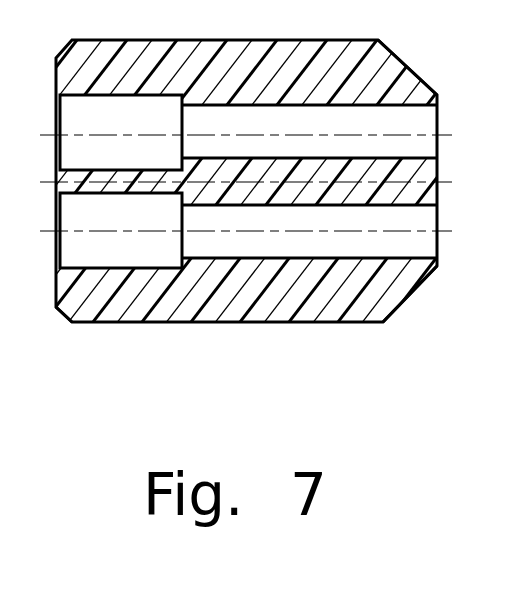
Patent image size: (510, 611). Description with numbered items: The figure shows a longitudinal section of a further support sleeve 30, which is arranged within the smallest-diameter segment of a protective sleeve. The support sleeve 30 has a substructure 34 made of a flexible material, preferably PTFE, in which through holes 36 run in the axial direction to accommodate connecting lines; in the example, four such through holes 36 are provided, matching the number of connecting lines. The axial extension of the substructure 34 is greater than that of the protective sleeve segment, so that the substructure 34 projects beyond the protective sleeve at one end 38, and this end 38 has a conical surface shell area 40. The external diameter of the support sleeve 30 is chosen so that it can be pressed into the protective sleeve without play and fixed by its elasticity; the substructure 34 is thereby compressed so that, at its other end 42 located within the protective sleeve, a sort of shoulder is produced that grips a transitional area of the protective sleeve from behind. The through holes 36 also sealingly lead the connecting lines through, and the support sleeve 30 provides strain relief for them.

The support sleeve 30 is at (243, 215).
The substructure 34 is at (280, 310).
The through holes 36 is at (210, 245).
The end 38 is at (365, 297).
The conical surface shell area 40 is at (422, 77).
The end 42 is at (87, 312).